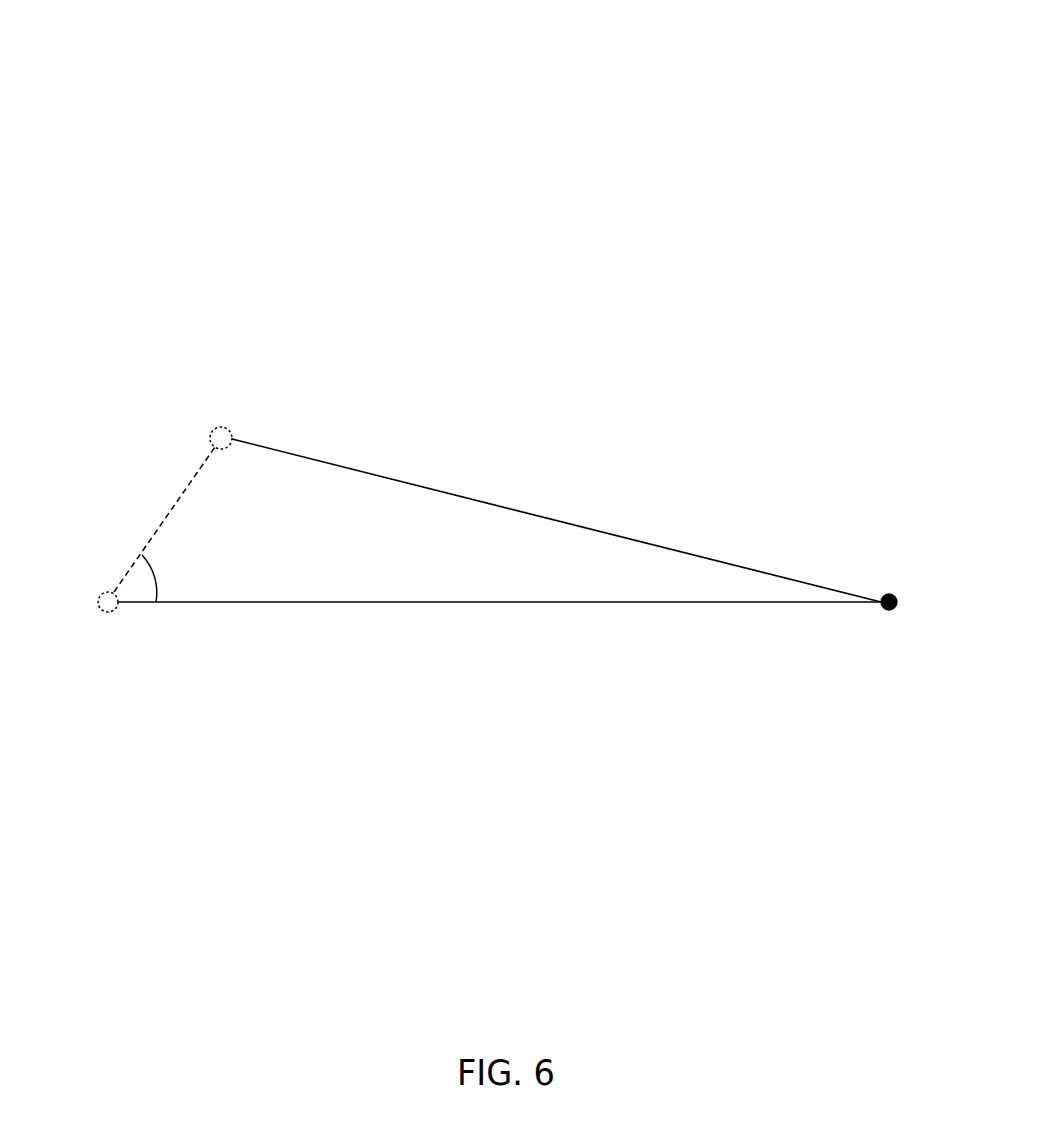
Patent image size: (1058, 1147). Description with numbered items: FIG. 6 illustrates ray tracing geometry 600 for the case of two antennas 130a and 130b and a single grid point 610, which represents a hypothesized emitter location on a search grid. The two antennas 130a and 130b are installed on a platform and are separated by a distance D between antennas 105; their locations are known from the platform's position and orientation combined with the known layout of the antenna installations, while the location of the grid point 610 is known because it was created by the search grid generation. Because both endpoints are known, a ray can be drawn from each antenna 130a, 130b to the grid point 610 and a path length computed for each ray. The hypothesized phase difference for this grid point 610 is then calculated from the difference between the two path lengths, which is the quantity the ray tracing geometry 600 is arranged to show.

The ray tracing geometry 600 is at (508, 76).
The antenna 130a is at (258, 400).
The antenna 130b is at (112, 671).
The distance D between antennas 105 is at (139, 508).
The grid point 610 is at (953, 638).